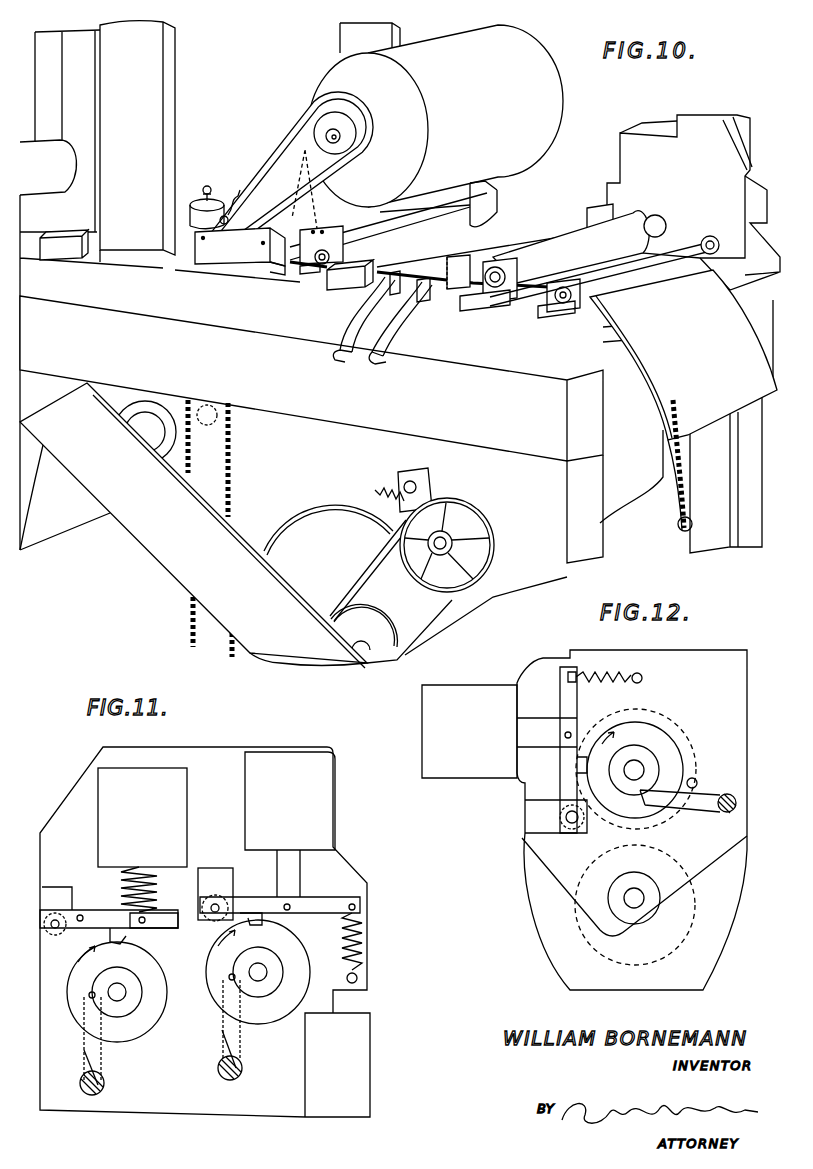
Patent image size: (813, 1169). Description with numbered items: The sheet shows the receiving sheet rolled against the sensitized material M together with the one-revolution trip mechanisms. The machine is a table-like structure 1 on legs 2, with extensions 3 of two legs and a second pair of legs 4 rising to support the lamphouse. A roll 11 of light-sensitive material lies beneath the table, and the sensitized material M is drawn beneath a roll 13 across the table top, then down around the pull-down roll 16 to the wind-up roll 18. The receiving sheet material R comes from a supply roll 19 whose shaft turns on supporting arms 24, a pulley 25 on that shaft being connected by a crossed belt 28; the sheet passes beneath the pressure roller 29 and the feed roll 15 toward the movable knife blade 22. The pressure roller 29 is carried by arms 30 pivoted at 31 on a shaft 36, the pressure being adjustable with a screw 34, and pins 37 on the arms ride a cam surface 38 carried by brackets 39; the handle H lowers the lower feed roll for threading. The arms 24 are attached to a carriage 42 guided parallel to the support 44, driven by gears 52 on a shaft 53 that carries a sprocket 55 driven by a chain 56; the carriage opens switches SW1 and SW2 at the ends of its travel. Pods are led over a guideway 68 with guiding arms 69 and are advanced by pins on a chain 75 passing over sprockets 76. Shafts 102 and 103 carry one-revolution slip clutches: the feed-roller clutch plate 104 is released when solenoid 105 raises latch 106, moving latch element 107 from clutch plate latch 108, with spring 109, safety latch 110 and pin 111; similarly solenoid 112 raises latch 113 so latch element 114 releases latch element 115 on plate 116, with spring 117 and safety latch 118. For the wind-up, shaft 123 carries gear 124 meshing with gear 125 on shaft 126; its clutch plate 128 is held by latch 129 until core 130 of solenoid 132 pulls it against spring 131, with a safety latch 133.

In FIG. 10, the table-like structure 1 is at (311, 429).
In FIG. 10, the legs 2 is at (749, 556).
In FIG. 10, the extensions of the legs 3 is at (137, 138).
In FIG. 10, the second pair of legs 4 is at (52, 40).
In FIG. 10, the roll of light-sensitive coated material 11 is at (70, 518).
In FIG. 10, the roll 13 is at (48, 167).
In FIG. 10, the feed roll 15 is at (580, 238).
In FIG. 10, the pull-down roll 16 is at (640, 497).
In FIG. 12, the pull-down roll 16 is at (538, 958).
In FIG. 10, the wind-up roll 18 is at (340, 515).
In FIG. 10, the supply roll of receiving sheet 19 is at (548, 105).
In FIG. 10, the movable knife blade 22 is at (678, 243).
In FIG. 10, the supporting arms 24 is at (270, 152).
In FIG. 10, the pulley 25 is at (325, 125).
In FIG. 10, the belt 28 is at (290, 172).
In FIG. 10, the pressure roller 29 is at (476, 213).
In FIG. 10, the supporting arms 30 is at (310, 268).
In FIG. 10, the pivot 31 is at (228, 200).
In FIG. 10, the screw 34 is at (205, 188).
In FIG. 10, the shaft 36 is at (322, 266).
In FIG. 10, the pins 37 is at (492, 193).
In FIG. 10, the cam surface 38 is at (600, 205).
In FIG. 10, the brackets 39 is at (588, 208).
In FIG. 10, the carriage 42 is at (273, 268).
In FIG. 10, the support 44 is at (303, 272).
In FIG. 10, the gears 52 is at (200, 445).
In FIG. 10, the shaft 53 is at (233, 422).
In FIG. 10, the sprocket 55 is at (233, 445).
In FIG. 10, the chain 56 is at (233, 482).
In FIG. 10, the guideway 68 is at (350, 356).
In FIG. 10, the guiding arms 69 is at (376, 362).
In FIG. 10, the chain 75 is at (677, 523).
In FIG. 10, the sprockets 76 is at (683, 530).
In FIG. 10, the feed-roller shaft 102 is at (655, 215).
In FIG. 11, the feed-roller shaft 102 is at (262, 972).
In FIG. 10, the shaft 103 is at (711, 236).
In FIG. 11, the shaft 103 is at (120, 996).
In FIG. 11, the one-revolution clutch plate 104 is at (270, 1020).
In FIG. 11, the solenoid 105 is at (290, 824).
In FIG. 11, the latch 106 is at (352, 905).
In FIG. 11, the latch element 107 is at (270, 918).
In FIG. 11, the clutch plate latch 108 is at (250, 907).
In FIG. 11, the spring 109 is at (363, 945).
In FIG. 11, the safety latch 110 is at (241, 1058).
In FIG. 11, the pin 111 is at (224, 975).
In FIG. 11, the solenoid 112 is at (142, 817).
In FIG. 11, the latch 113 is at (165, 918).
In FIG. 11, the latch element 114 is at (122, 922).
In FIG. 11, the latch element 115 is at (128, 940).
In FIG. 11, the one-revolution plate 116 is at (117, 1040).
In FIG. 11, the spring 117 is at (120, 878).
In FIG. 11, the safety latch 118 is at (86, 1048).
In FIG. 12, the shaft 123 is at (636, 770).
In FIG. 12, the gear 124 is at (673, 720).
In FIG. 12, the gear 125 is at (695, 917).
In FIG. 10, the shaft 126 is at (447, 543).
In FIG. 12, the shaft 126 is at (640, 890).
In FIG. 12, the one-revolution clutch plate 128 is at (643, 730).
In FIG. 12, the latch 129 is at (583, 763).
In FIG. 12, the core 130 is at (547, 750).
In FIG. 12, the spring 131 is at (623, 677).
In FIG. 12, the solenoid 132 is at (469, 731).
In FIG. 12, the safety latch 133 is at (703, 787).
In FIG. 10, the handle H is at (620, 337).
In FIG. 10, the sensitized material M is at (453, 300).
In FIG. 10, the receiving sheet material R is at (318, 100).
In FIG. 10, the normally-closed switch SW1 is at (54, 260).
In FIG. 10, the switch SW2 is at (340, 292).